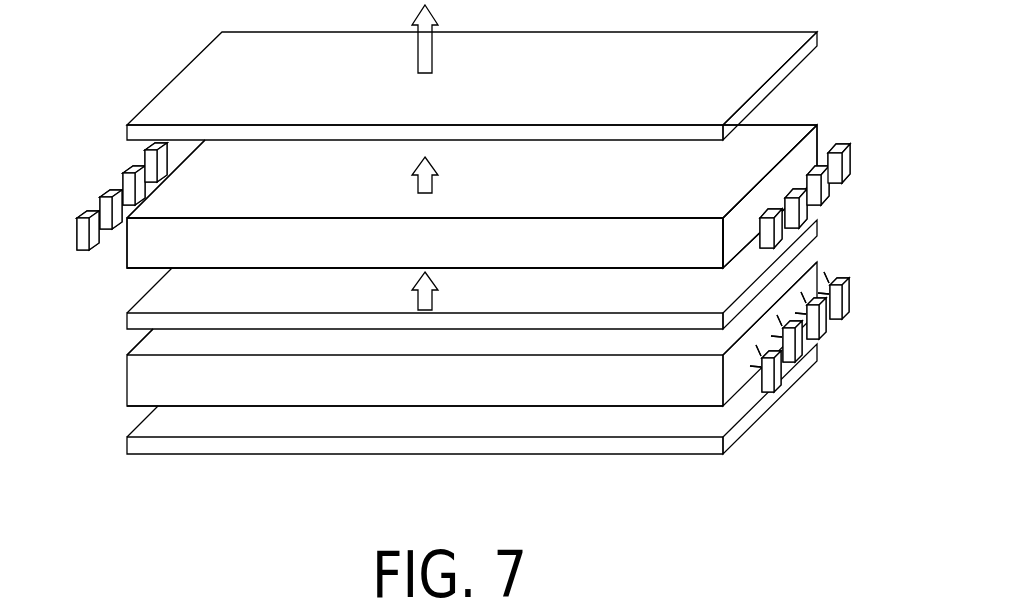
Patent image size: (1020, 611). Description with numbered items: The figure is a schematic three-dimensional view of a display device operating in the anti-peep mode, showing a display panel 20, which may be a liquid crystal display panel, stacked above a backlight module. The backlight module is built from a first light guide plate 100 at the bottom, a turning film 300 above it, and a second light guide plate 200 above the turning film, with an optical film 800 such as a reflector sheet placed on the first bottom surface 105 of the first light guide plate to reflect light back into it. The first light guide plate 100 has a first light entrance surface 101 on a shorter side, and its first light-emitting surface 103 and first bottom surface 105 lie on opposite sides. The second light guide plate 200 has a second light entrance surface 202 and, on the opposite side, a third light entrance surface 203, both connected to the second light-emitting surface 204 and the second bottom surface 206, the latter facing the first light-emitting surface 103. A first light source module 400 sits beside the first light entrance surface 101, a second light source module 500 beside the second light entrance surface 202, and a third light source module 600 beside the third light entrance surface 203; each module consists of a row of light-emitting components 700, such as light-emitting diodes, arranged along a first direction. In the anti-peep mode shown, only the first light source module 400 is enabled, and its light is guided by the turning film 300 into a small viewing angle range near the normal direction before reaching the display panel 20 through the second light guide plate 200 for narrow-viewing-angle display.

The display panel 20 is at (818, 38).
The second light guide plate 200 is at (779, 107).
The second light-emitting surface 204 is at (785, 135).
The second light entrance surface 202 is at (808, 147).
The third light entrance surface 203 is at (125, 252).
The second bottom surface 206 is at (137, 272).
The second light source module 500 is at (854, 150).
The light-emitting components 700 is at (77, 233).
The third light source module 600 is at (80, 244).
The turning film 300 is at (818, 228).
The first light guide plate 100 is at (113, 391).
The first light entrance surface 101 is at (812, 275).
The first light-emitting surface 103 is at (147, 340).
The first bottom surface 105 is at (138, 408).
The first light source module 400 is at (854, 287).
The optical film 800 is at (125, 445).